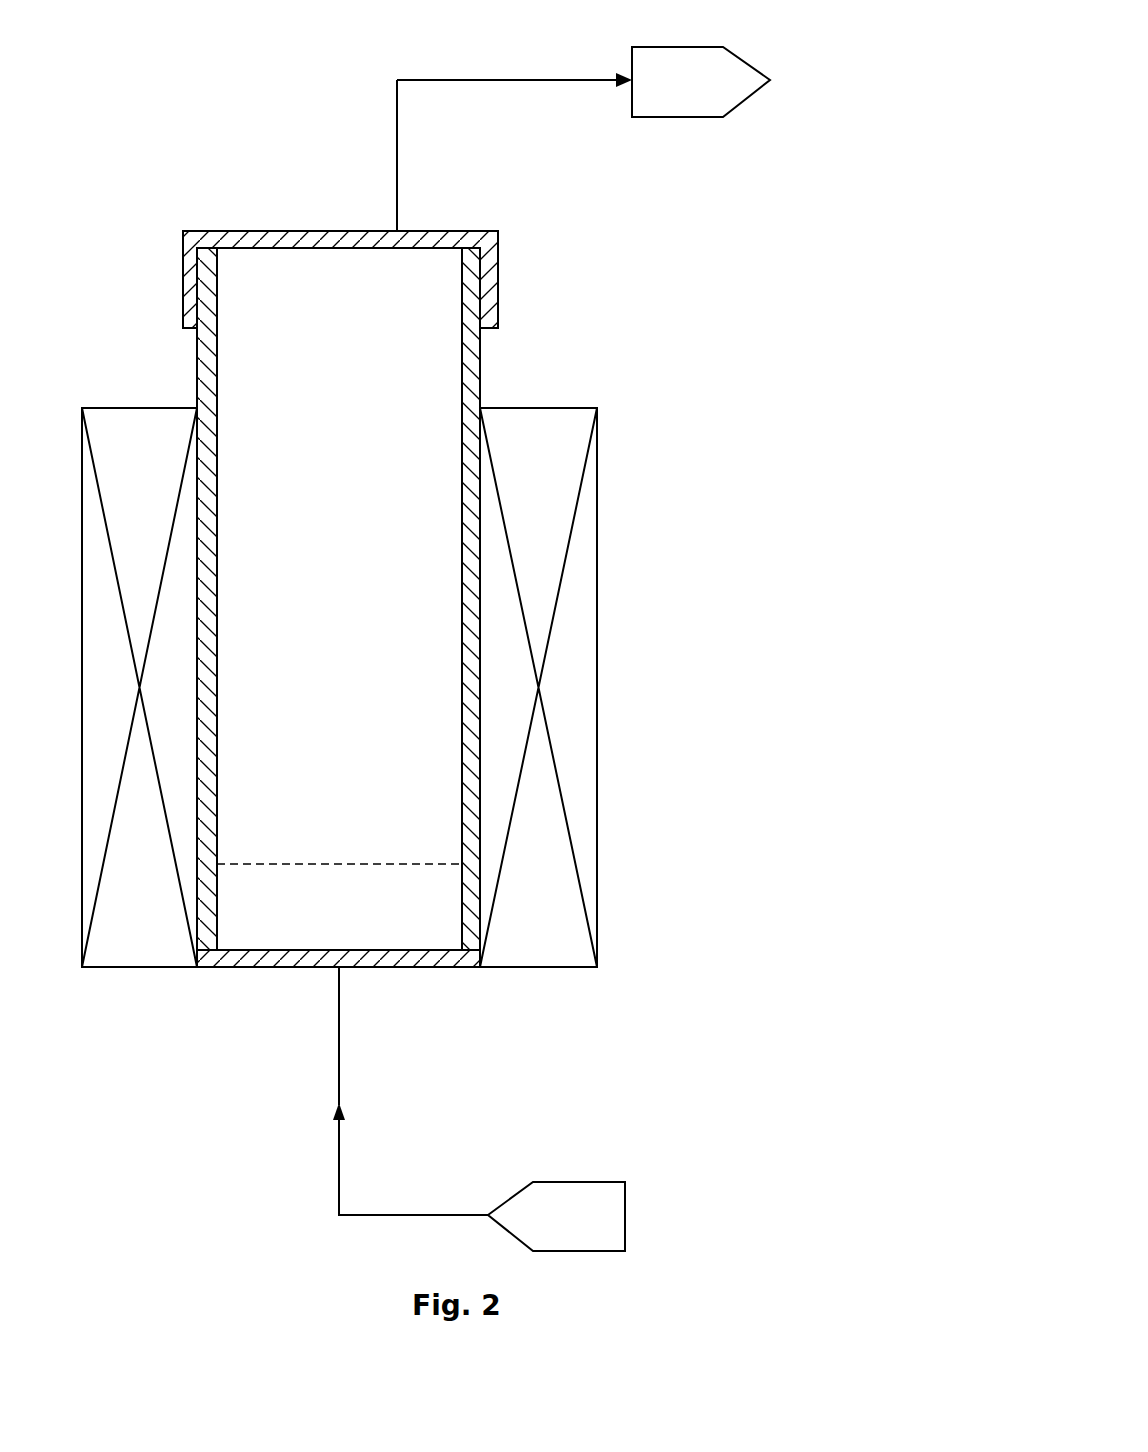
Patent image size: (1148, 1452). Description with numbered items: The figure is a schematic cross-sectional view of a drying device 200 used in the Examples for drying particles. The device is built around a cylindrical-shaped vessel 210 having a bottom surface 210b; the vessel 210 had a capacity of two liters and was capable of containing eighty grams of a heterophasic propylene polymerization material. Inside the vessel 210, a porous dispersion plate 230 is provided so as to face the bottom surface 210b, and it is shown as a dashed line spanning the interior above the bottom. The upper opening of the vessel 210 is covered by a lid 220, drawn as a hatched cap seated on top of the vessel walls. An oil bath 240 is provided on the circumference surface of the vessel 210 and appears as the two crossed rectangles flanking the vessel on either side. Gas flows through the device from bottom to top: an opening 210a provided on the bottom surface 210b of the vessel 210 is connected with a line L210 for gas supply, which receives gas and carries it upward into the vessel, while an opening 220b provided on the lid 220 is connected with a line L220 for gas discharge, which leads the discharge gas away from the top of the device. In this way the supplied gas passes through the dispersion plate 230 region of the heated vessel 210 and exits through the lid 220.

The drying device 200 is at (500, 631).
The vessel 210 is at (481, 353).
The opening 210a is at (343, 968).
The bottom surface 210b is at (259, 968).
The lid 220 is at (479, 231).
The opening 220b is at (399, 230).
The dispersion plate 230 is at (383, 864).
The oil bath 240 is at (580, 590).
The line for gas supply L210 is at (437, 1215).
The line for gas discharge L220 is at (478, 80).